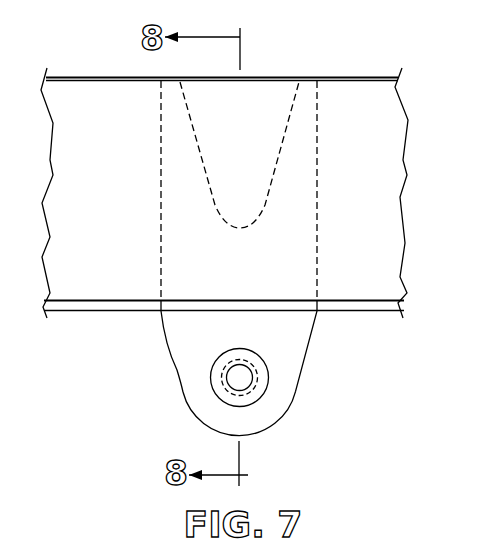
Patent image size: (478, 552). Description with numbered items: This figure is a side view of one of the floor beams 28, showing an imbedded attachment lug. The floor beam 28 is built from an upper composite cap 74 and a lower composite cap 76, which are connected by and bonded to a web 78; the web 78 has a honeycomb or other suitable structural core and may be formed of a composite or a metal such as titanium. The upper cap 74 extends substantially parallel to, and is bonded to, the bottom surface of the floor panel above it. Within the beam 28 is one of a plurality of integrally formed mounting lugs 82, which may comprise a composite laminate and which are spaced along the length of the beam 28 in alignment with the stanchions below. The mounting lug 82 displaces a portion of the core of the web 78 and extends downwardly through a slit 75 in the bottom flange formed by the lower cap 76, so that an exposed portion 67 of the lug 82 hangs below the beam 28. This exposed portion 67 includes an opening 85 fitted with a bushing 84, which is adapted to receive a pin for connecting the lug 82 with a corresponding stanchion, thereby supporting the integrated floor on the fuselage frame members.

The floor beam 28 is at (378, 43).
The upper composite cap 74 is at (337, 77).
The lower composite cap 76 is at (72, 311).
The web 78 is at (102, 113).
The exposed portion 67 is at (168, 397).
The mounting lug 82 is at (190, 337).
The slit 75 is at (322, 313).
The bushing 84 is at (262, 403).
The opening 85 is at (240, 377).